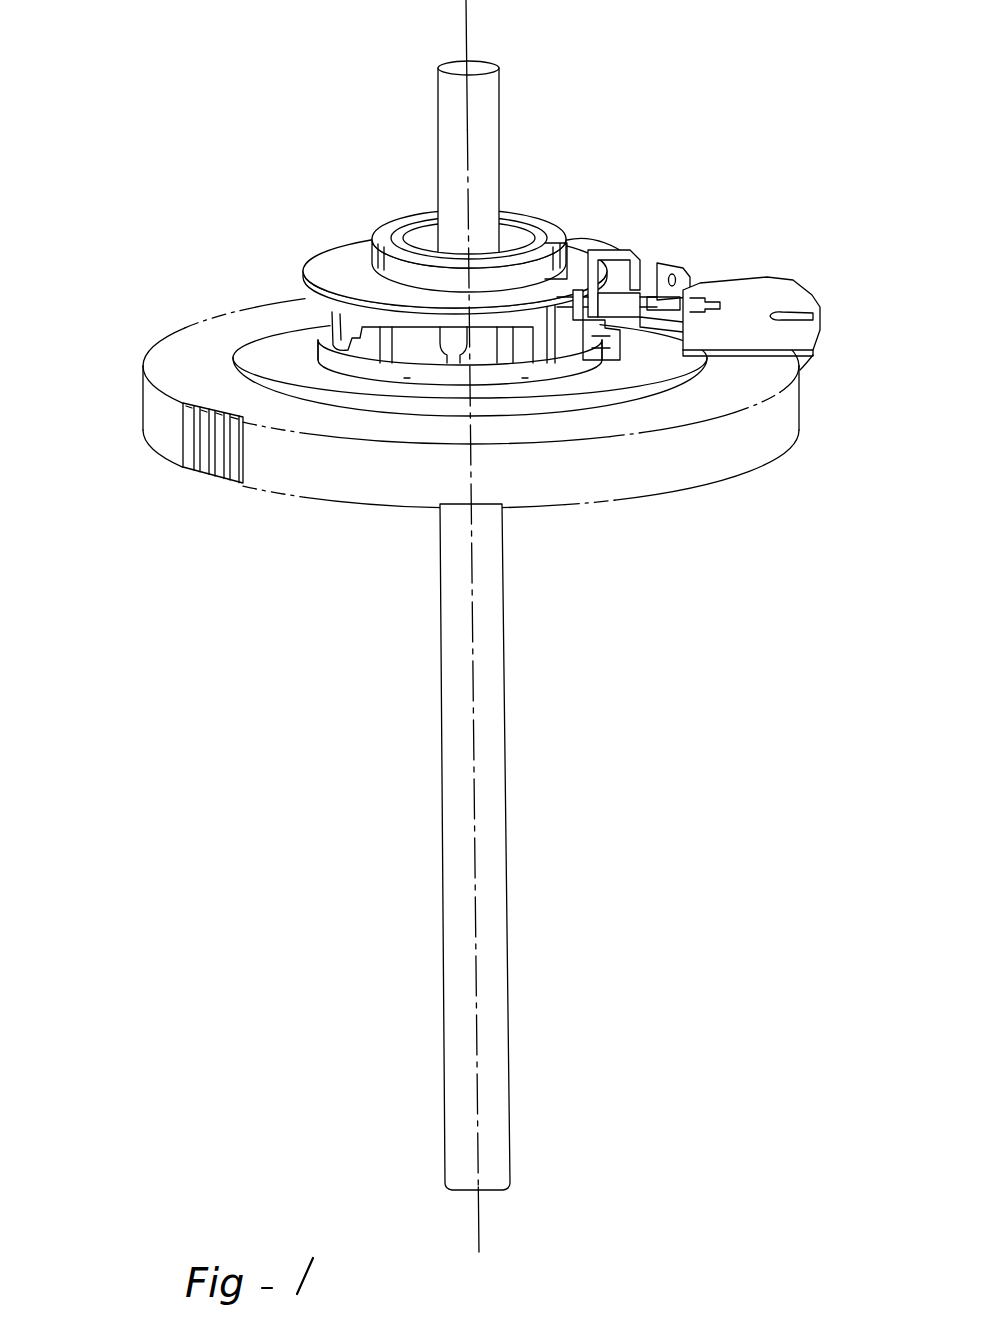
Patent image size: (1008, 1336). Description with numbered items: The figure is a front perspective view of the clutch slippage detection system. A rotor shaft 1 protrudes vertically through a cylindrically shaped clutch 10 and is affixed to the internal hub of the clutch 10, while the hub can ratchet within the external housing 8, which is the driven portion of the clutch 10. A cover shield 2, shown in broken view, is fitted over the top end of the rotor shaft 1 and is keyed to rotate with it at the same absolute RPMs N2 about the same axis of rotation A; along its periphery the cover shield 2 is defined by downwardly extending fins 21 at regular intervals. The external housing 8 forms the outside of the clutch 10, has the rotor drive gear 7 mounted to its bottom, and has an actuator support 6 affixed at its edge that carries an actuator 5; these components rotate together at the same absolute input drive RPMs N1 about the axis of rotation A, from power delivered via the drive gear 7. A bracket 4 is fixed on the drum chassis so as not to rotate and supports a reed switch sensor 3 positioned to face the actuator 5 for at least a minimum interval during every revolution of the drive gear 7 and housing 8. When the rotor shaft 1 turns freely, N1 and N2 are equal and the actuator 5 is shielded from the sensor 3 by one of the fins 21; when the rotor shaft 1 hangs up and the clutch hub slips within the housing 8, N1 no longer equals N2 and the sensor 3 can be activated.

The rotor shaft 1 is at (487, 163).
The cover shield 2 is at (345, 252).
The reed switch sensor 3 is at (657, 263).
The bracket 4 is at (780, 297).
The actuator 5 is at (617, 320).
The actuator support 6 is at (617, 327).
The rotor drive gear 7 is at (243, 315).
The external housing 8 is at (520, 363).
The clutch 10 is at (486, 345).
The fins 21 is at (452, 345).
The axis of rotation A is at (468, 35).
The absolute input drive RPMs N1 is at (185, 332).
The absolute RPMs of the rotor shaft N2 is at (513, 100).